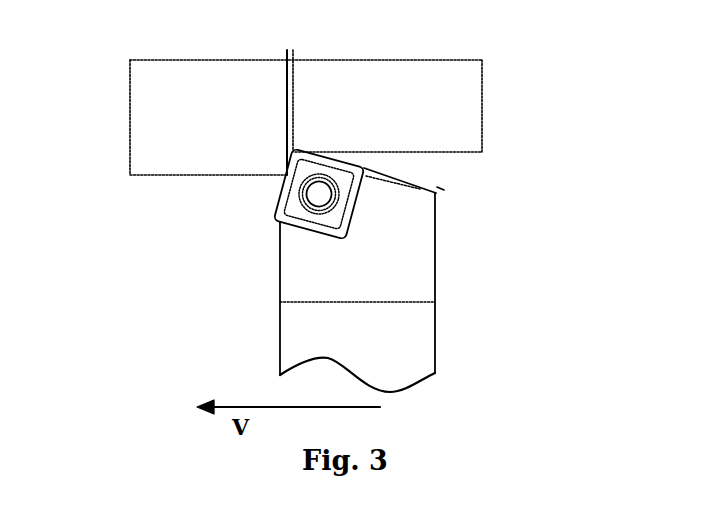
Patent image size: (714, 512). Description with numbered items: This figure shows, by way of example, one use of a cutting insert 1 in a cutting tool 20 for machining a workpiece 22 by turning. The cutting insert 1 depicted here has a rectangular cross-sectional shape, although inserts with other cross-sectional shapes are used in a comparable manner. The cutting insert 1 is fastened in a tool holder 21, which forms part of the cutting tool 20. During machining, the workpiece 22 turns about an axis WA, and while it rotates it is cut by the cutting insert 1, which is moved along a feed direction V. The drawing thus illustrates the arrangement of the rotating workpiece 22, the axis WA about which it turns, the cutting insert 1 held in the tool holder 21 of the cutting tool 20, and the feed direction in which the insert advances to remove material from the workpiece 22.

The axis WA is at (192, 58).
The workpiece 22 is at (158, 148).
The cutting insert 1 is at (335, 217).
The cutting tool 20 is at (268, 350).
The tool holder 21 is at (385, 337).